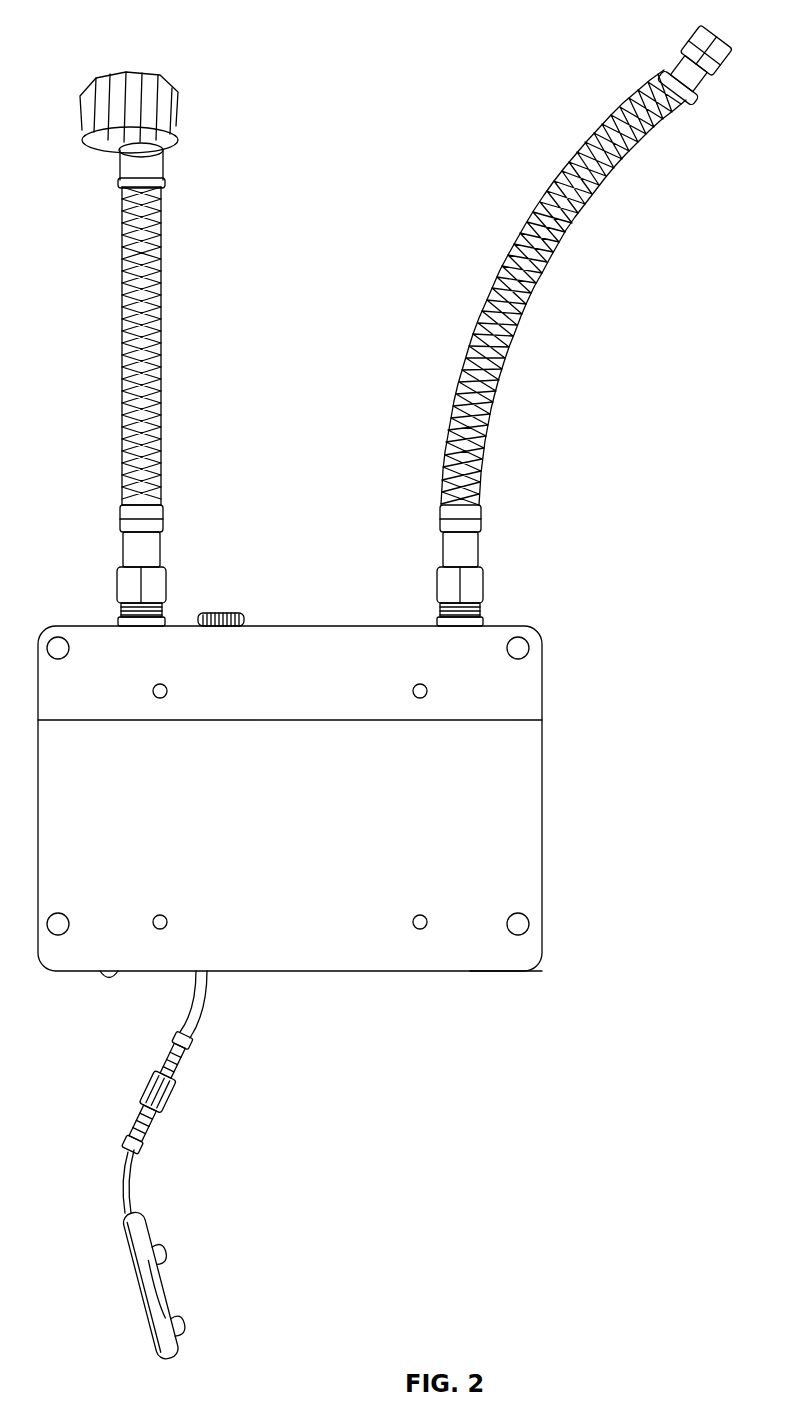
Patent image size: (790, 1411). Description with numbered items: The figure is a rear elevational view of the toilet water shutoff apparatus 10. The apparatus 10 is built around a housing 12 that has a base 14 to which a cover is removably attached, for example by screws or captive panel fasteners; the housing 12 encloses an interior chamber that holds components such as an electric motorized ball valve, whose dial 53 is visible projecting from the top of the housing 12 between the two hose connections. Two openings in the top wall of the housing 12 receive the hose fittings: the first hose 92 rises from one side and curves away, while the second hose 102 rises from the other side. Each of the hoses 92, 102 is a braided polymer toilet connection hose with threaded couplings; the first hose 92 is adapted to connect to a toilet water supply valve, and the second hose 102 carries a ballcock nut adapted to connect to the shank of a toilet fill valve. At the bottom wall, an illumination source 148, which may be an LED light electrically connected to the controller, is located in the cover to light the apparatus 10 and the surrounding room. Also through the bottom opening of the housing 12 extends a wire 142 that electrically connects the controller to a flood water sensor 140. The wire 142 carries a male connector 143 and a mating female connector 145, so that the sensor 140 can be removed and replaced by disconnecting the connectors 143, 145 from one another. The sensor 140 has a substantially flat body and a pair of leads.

The water shutoff apparatus 10 is at (598, 590).
The housing 12 is at (543, 892).
The base 14 is at (478, 957).
The dial 53 is at (222, 614).
The first hose 92 is at (483, 362).
The second hose 102 is at (127, 284).
The flood water sensor 140 is at (142, 1253).
The wire 142 is at (205, 1012).
The male connector 143 is at (112, 1132).
The female connector 145 is at (168, 1042).
The illumination source 148 is at (97, 980).